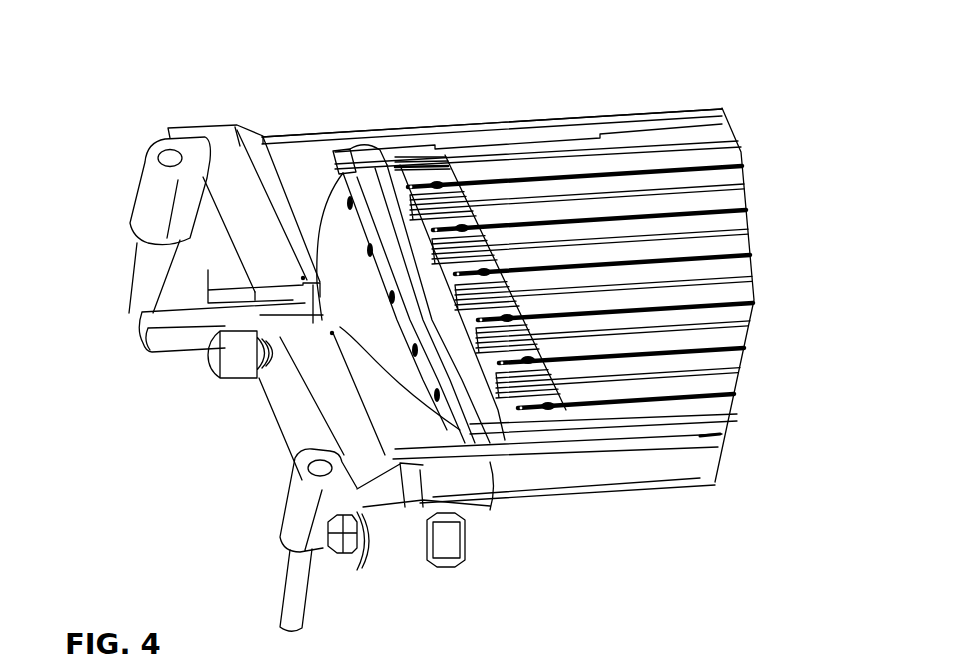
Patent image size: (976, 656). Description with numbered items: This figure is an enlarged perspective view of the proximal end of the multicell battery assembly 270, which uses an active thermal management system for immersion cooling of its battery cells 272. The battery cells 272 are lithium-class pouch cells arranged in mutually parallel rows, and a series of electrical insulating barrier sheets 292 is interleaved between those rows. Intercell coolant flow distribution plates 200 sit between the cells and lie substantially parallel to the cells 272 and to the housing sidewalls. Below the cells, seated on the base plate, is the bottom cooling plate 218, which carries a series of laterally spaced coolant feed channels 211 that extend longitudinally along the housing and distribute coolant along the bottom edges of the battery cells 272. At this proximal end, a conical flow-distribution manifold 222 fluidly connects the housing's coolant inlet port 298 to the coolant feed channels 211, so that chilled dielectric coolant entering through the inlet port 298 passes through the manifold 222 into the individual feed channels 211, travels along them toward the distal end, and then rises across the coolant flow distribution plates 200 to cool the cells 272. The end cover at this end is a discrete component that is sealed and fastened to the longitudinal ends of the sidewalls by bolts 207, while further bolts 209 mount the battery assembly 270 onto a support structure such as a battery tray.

The multicell battery assembly 270 is at (205, 50).
The conical flow-distribution manifold 222 is at (317, 228).
The electrical insulating barrier sheets 292 is at (742, 144).
The battery cells 272 is at (742, 153).
The coolant flow distribution plates 200 is at (770, 207).
The bolts 209 is at (152, 259).
The coolant inlet port 298 is at (133, 340).
The bolts 207 is at (343, 573).
The bottom cooling plate 218 is at (478, 425).
The coolant feed channels 211 is at (578, 416).